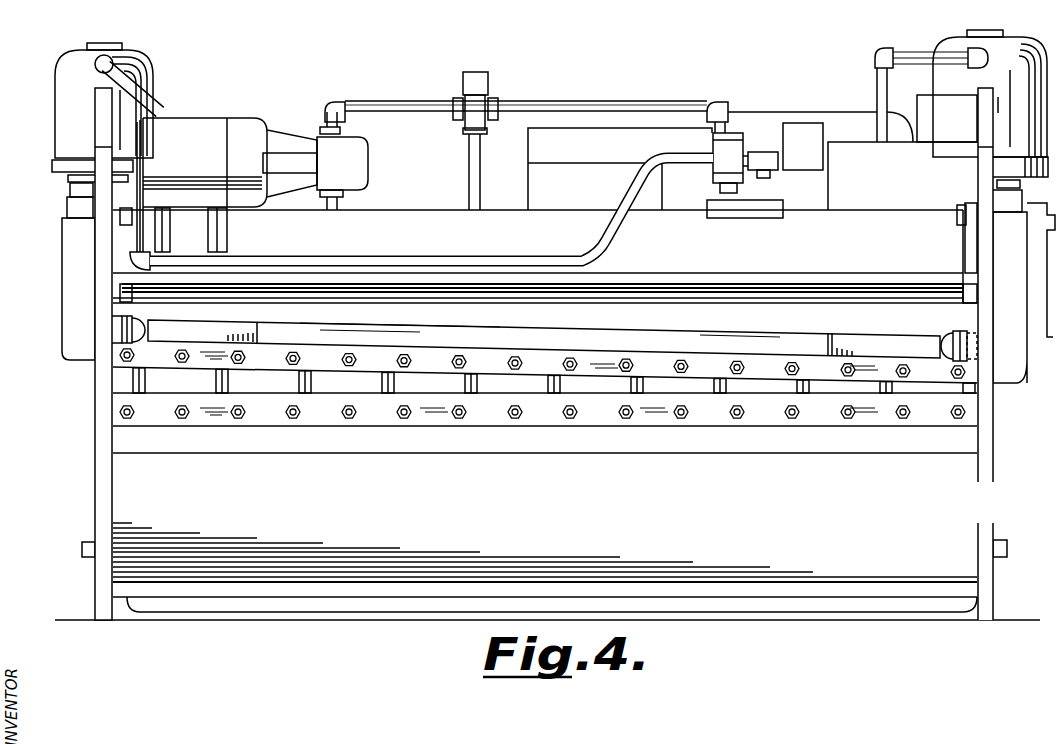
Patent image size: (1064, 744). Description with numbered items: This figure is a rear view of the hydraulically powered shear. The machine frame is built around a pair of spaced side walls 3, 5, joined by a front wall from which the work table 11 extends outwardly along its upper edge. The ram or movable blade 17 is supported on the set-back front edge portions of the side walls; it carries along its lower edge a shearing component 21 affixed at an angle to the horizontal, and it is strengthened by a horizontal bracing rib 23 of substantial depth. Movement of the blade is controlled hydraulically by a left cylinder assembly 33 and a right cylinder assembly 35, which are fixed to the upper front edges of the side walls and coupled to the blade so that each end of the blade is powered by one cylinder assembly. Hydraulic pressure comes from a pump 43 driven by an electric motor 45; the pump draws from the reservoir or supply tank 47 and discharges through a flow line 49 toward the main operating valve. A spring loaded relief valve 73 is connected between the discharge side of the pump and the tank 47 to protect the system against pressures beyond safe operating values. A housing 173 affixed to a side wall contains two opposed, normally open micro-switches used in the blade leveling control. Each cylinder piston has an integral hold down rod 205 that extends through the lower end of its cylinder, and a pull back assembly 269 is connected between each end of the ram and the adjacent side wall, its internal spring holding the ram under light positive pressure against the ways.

The side wall 3 is at (993, 422).
The side wall 5 is at (95, 393).
The work table 11 is at (135, 496).
The movable blade 17 is at (544, 333).
The shearing component 21 is at (360, 371).
The horizontal bracing rib 23 is at (743, 337).
The left cylinder assembly 33 is at (975, 93).
The right cylinder assembly 35 is at (88, 115).
The pump 43 is at (352, 176).
The electric motor 45 is at (195, 137).
The supply tank 47 is at (447, 232).
The flow line 49 is at (603, 111).
The relief valve 73 is at (458, 95).
The housing 173 is at (1024, 357).
The hold down rod 205 is at (228, 381).
The pull back assembly 269 is at (142, 318).